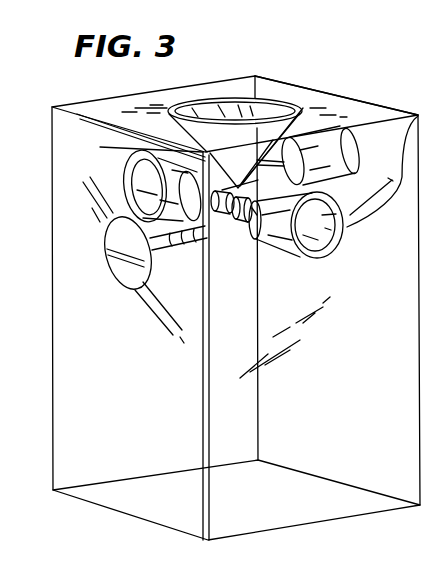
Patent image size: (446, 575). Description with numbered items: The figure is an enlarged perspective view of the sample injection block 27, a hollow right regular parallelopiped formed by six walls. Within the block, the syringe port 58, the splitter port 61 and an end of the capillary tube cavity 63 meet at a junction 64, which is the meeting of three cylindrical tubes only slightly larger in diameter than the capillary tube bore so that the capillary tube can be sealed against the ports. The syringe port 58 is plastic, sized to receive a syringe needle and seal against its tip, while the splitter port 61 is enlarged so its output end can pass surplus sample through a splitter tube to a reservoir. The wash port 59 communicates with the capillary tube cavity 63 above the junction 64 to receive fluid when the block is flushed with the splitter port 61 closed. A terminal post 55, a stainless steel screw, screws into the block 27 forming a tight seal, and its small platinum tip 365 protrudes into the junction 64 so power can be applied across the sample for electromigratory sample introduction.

The sample injection block 27 is at (352, 83).
The terminal post 55 is at (113, 265).
The syringe port 58 is at (418, 115).
The wash port 59 is at (357, 152).
The splitter port 61 is at (125, 178).
The capillary tube cavity 63 is at (238, 113).
The junction 64 is at (228, 222).
The platinum tip 365 is at (240, 232).